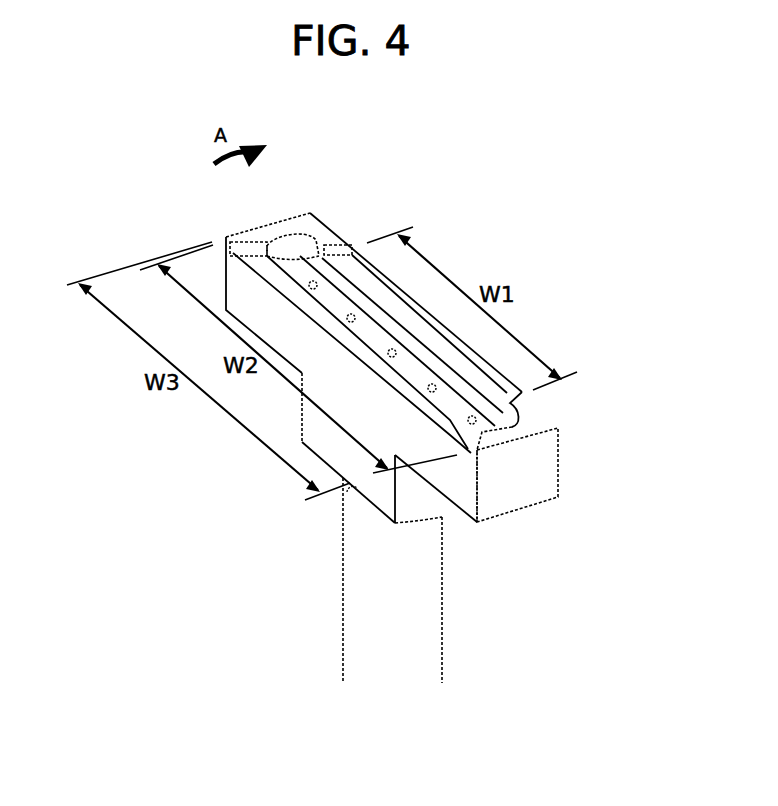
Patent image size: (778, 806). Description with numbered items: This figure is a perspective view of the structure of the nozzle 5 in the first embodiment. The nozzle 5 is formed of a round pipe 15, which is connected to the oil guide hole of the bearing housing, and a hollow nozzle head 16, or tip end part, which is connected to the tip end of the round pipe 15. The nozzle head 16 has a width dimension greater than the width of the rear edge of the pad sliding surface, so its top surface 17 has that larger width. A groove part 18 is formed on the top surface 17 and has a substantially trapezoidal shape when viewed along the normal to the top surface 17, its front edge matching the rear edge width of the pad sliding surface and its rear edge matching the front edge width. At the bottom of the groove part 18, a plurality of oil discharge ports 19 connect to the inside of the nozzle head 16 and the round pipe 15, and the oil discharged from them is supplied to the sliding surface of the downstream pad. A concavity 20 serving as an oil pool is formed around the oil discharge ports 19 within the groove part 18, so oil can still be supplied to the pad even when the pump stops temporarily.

The nozzle 5 is at (586, 606).
The round pipe 15 is at (430, 628).
The nozzle head 16 is at (521, 516).
The top surface 17 is at (320, 238).
The groove part 18 is at (256, 263).
The oil discharge ports 19 is at (352, 317).
The concavity 20 is at (301, 262).